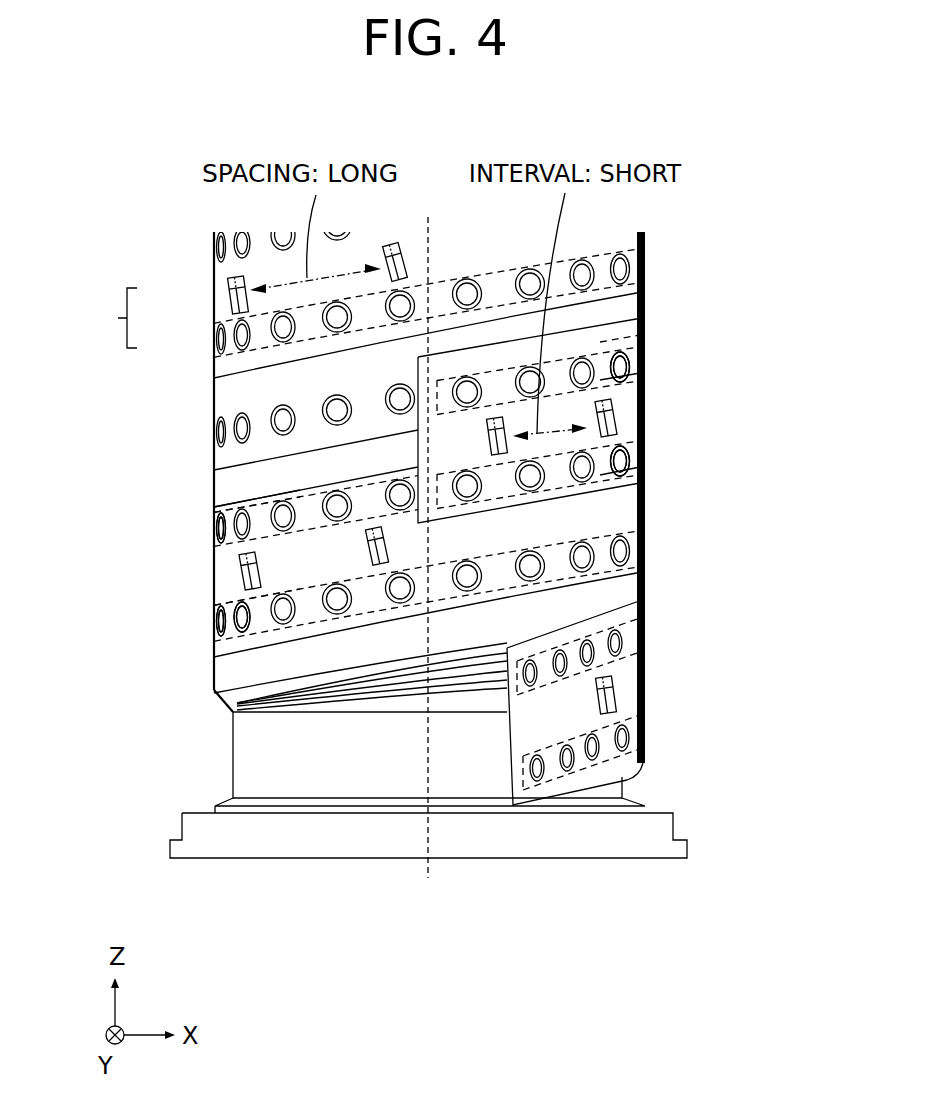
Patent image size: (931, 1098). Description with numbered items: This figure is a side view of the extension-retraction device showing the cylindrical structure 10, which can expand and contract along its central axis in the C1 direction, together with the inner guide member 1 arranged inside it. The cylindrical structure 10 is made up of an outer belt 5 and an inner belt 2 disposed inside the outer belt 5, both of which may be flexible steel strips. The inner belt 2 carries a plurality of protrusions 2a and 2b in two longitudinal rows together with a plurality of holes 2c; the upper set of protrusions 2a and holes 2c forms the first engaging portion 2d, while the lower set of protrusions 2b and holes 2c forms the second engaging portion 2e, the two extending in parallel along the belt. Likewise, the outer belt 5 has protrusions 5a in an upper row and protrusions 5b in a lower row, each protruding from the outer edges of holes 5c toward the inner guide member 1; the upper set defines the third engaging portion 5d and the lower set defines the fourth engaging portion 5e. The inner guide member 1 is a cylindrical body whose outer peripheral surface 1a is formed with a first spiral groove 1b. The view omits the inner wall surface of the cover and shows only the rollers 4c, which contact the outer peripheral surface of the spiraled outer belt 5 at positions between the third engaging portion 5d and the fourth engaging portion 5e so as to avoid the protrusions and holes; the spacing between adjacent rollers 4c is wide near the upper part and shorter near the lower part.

The inner guide member 1 is at (628, 835).
The outer peripheral surface 1a is at (243, 762).
The first spiral groove 1b is at (248, 696).
The inner belt 2 is at (214, 380).
The protrusions 2a is at (213, 508).
The protrusions 2b is at (215, 618).
The holes 2c is at (217, 530).
The first engaging portion 2d is at (213, 493).
The second engaging portion 2e is at (210, 593).
The roller 4c is at (641, 400).
The outer belt 5 is at (214, 301).
The protrusions 5a is at (641, 373).
The protrusions 5b is at (641, 467).
The holes 5c is at (641, 363).
The third engaging portion 5d is at (641, 335).
The fourth engaging portion 5e is at (642, 237).
The cylindrical structure 10 is at (113, 318).
The central axis direction C1 is at (433, 547).